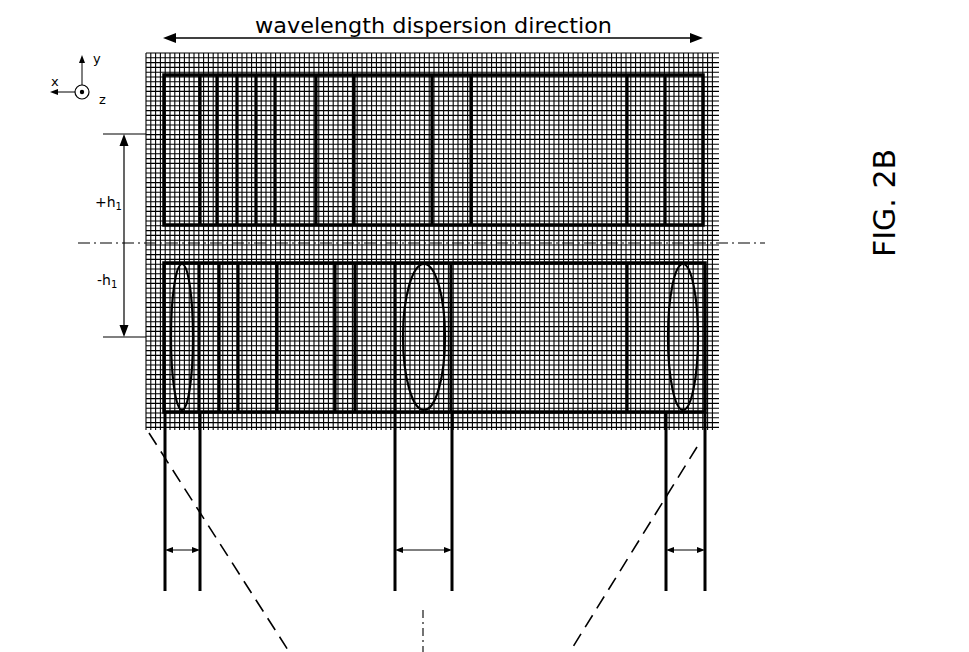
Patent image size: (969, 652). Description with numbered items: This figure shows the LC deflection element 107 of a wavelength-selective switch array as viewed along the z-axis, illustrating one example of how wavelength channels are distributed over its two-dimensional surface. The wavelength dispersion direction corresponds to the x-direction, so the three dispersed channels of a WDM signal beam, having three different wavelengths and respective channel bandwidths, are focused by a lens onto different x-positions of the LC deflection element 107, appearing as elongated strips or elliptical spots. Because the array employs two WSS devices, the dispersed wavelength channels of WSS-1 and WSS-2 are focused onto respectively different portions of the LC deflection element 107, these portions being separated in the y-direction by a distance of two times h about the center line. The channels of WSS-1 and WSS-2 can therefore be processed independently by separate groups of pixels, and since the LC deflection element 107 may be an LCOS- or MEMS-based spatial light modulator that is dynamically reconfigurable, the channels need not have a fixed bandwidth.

The LC deflection element 107 is at (718, 52).
The second wavelength-selective switch WSS-2 is at (738, 55).
The first wavelength-selective switch WSS-1 is at (735, 428).